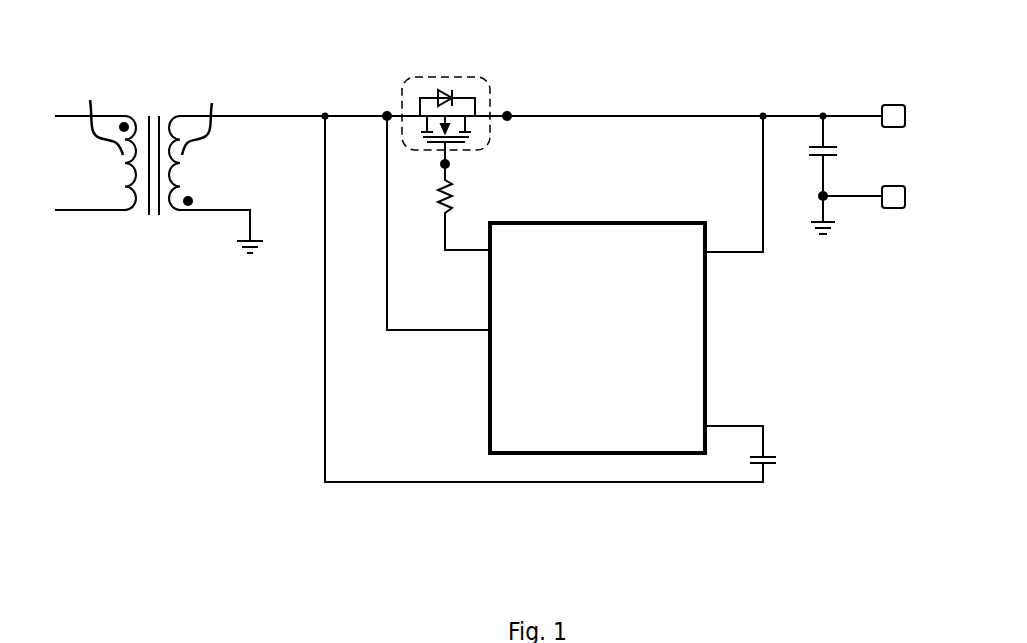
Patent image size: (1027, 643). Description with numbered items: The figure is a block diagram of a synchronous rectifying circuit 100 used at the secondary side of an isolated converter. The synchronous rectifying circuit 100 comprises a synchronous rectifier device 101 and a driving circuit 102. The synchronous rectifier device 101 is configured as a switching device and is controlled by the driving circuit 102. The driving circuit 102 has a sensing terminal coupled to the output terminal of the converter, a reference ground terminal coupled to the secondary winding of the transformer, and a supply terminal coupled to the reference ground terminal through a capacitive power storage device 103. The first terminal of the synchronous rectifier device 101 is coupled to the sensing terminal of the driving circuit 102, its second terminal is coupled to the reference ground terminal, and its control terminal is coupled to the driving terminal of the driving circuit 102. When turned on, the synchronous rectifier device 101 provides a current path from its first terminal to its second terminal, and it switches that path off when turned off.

The synchronous rectifying circuit 100 is at (278, 45).
The synchronous rectifier device 101 is at (452, 75).
The driving circuit 102 is at (613, 346).
The capacitive power storage device 103 is at (777, 452).